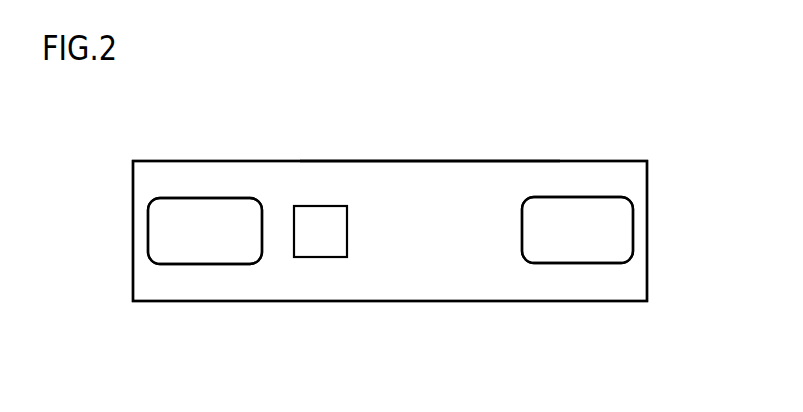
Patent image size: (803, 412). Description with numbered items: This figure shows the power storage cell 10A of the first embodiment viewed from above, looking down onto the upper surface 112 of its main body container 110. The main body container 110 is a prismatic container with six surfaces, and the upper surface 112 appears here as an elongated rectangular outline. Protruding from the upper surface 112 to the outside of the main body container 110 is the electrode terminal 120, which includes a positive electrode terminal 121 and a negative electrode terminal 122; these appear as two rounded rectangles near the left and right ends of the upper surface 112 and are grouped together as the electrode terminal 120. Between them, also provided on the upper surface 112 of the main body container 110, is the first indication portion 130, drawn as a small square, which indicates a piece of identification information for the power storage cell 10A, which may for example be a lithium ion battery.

The power storage cell 10A is at (151, 147).
The main body container 110 is at (609, 159).
The upper surface 112 is at (426, 175).
The electrode terminal 120 is at (600, 343).
The positive electrode terminal 121 is at (202, 255).
The negative electrode terminal 122 is at (577, 255).
The first indication portion 130 is at (318, 215).